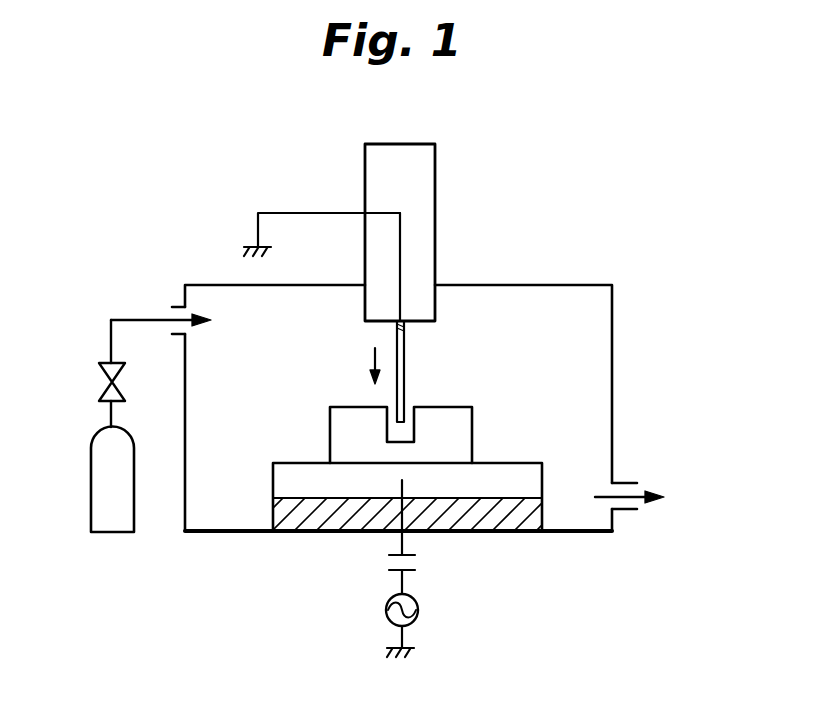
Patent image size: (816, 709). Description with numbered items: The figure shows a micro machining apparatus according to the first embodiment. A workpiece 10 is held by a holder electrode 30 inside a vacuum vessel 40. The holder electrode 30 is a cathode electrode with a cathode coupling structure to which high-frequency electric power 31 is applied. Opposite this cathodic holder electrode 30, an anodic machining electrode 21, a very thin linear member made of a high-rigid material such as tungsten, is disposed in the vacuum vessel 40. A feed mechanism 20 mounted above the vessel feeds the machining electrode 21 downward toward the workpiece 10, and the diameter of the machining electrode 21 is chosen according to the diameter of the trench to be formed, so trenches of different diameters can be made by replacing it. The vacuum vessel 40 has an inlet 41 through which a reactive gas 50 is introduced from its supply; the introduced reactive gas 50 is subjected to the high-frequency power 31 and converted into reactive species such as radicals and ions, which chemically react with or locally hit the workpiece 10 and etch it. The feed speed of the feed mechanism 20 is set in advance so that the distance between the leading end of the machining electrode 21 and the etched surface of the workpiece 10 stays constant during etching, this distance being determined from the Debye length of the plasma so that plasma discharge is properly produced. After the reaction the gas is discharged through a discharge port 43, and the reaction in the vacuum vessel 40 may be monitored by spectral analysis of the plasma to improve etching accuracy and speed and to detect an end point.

The workpiece 10 is at (336, 426).
The feed mechanism 20 is at (430, 221).
The machining electrode 21 is at (405, 362).
The holder electrode 30 is at (318, 487).
The high-frequency electric power 31 is at (418, 604).
The vacuum vessel 40 is at (566, 284).
The inlet 41 is at (174, 294).
The discharge port 43 is at (624, 518).
The reactive gas 50 is at (91, 491).